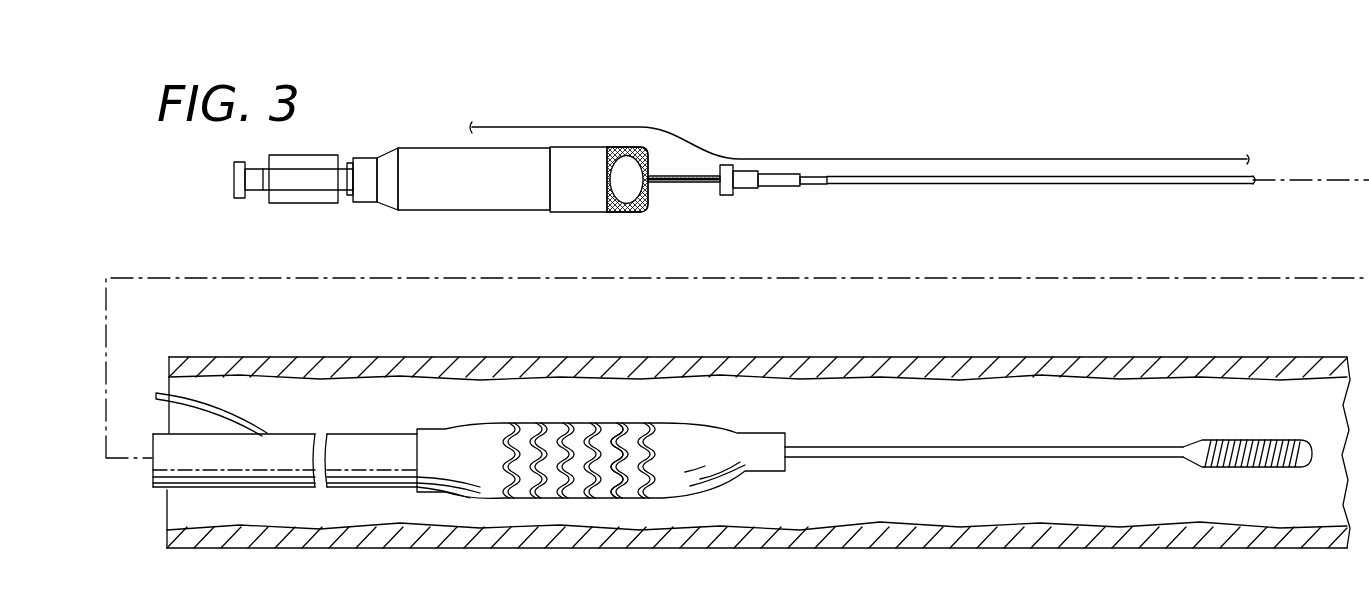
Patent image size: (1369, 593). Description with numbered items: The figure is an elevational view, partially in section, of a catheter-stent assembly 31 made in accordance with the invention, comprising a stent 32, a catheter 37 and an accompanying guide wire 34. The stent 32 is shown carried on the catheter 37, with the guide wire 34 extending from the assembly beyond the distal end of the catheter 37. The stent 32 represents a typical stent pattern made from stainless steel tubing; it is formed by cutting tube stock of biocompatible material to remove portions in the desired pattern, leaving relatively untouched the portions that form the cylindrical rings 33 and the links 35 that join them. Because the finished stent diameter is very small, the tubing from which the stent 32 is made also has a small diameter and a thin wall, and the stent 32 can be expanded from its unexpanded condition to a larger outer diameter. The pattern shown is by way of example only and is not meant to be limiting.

The catheter-stent assembly 31 is at (767, 88).
The stent 32 is at (697, 448).
The cylindrical rings 33 is at (547, 433).
The guide wire 34 is at (983, 447).
The links 35 is at (610, 458).
The catheter 37 is at (188, 462).